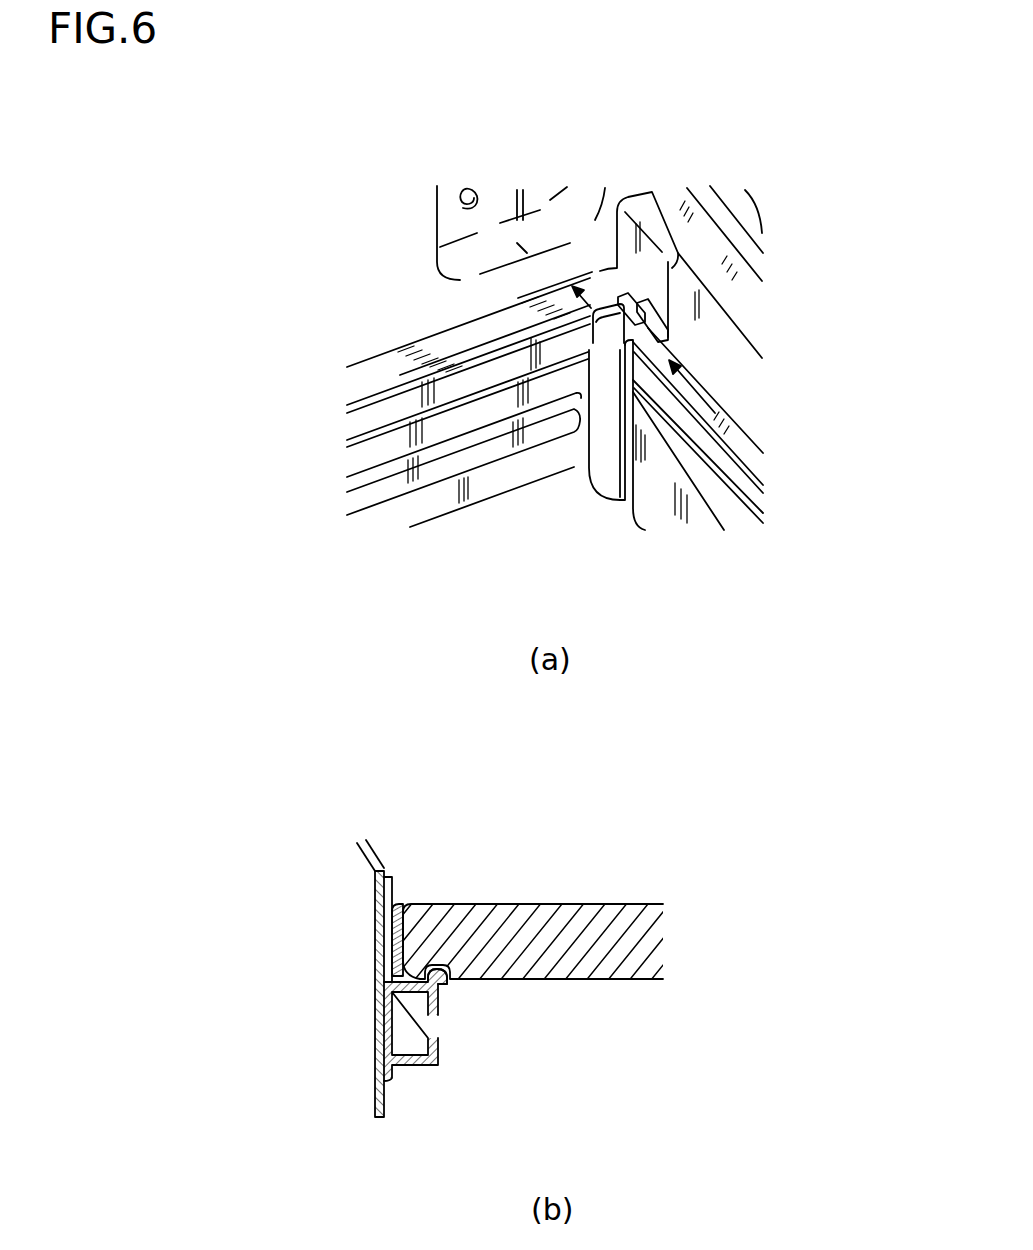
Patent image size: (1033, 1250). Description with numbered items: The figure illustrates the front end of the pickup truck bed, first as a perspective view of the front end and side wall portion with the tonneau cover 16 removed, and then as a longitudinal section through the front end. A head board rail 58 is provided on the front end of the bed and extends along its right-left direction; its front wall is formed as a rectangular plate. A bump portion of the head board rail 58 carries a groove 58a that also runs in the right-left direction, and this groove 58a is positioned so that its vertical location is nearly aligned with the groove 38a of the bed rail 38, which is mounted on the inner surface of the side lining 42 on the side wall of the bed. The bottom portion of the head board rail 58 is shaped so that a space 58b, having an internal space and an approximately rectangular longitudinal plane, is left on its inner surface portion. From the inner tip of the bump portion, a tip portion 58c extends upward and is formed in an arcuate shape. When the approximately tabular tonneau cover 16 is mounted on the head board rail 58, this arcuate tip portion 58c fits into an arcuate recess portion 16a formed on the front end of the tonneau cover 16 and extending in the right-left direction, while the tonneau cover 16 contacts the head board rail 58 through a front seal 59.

The side lining 42 is at (417, 237).
The bed rail 38 is at (378, 451).
The groove of the bed rail 38a is at (398, 365).
The head board rail 58 is at (723, 347).
The groove of the head board rail 58a is at (732, 440).
The space 58b is at (417, 1027).
The tip portion 58c is at (447, 985).
The front seal 59 is at (400, 900).
The tonneau cover 16 is at (533, 920).
The arcuate recess portion 16a is at (457, 962).